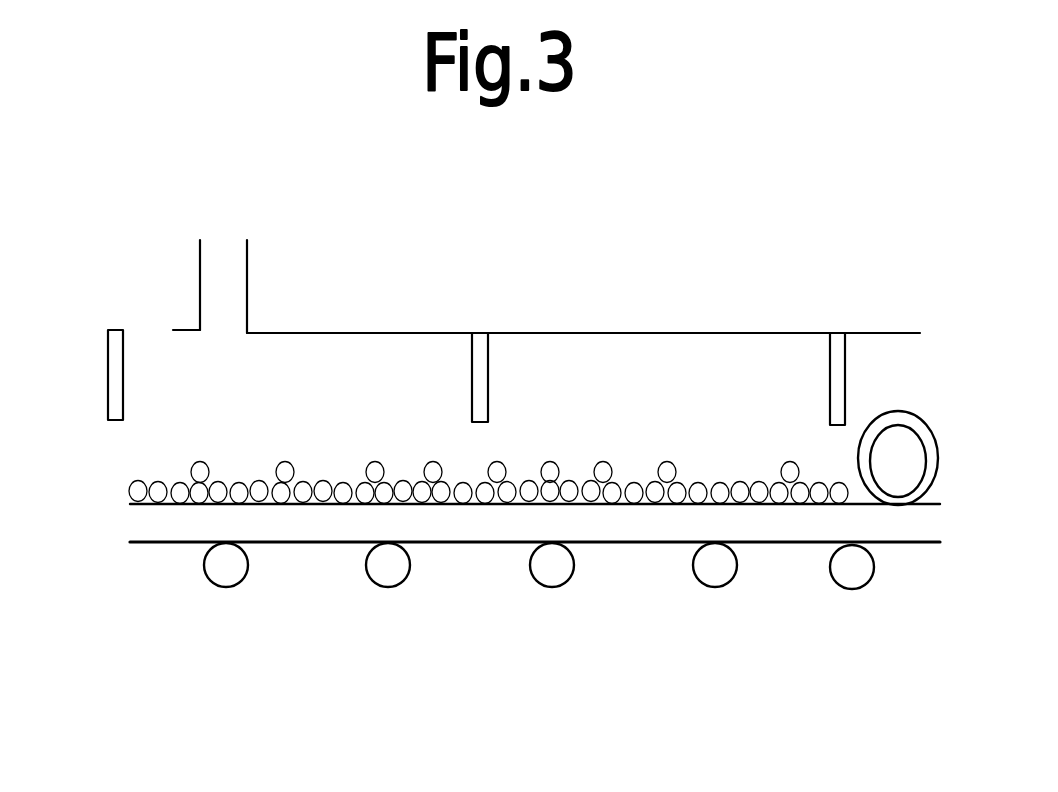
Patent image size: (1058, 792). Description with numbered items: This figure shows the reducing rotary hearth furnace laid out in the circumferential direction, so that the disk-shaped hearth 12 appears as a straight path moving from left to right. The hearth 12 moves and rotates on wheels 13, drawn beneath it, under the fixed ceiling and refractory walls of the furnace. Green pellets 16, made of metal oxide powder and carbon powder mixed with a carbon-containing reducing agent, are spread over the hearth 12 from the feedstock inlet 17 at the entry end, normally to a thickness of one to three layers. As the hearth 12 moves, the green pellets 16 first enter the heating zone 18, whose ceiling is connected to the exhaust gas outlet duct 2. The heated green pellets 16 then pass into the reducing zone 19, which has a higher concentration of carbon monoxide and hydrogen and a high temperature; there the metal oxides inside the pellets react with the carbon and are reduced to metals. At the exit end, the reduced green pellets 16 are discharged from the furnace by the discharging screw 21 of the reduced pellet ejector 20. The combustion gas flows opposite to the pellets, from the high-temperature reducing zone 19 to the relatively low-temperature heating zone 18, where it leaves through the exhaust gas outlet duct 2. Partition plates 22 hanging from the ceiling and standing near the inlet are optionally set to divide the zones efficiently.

The exhaust gas outlet duct 2 is at (212, 285).
The hearth 12 is at (478, 525).
The wheels 13 is at (378, 568).
The green pellets 16 is at (205, 487).
The feedstock inlet 17 is at (167, 357).
The heating zone 18 is at (335, 352).
The reducing zone 19 is at (665, 365).
The reduced pellet ejector 20 is at (890, 372).
The discharging screw 21 is at (905, 475).
The partition plates 22 is at (110, 397).